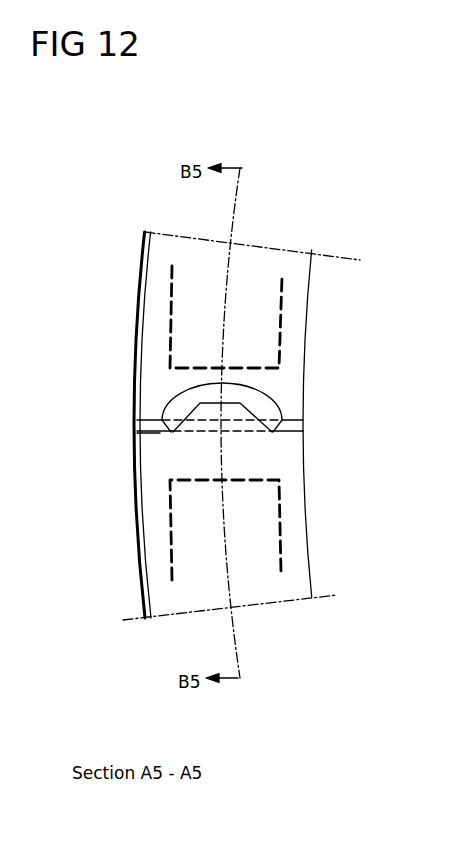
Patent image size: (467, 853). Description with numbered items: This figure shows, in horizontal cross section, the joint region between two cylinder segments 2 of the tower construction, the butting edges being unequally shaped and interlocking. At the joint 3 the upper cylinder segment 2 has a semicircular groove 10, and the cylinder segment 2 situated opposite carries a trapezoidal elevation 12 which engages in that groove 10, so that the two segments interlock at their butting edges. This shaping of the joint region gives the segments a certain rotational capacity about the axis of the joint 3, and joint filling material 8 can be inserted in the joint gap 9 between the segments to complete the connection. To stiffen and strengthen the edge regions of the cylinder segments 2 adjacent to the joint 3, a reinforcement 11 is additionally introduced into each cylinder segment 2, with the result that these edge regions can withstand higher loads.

The cylinder segment 2 is at (258, 266).
The joint 3 is at (310, 424).
The joint filling material 8 is at (272, 397).
The joint gap 9 is at (285, 433).
The semicircular groove 10 is at (175, 392).
The reinforcement 11 is at (279, 316).
The trapezoidal elevation 12 is at (145, 434).